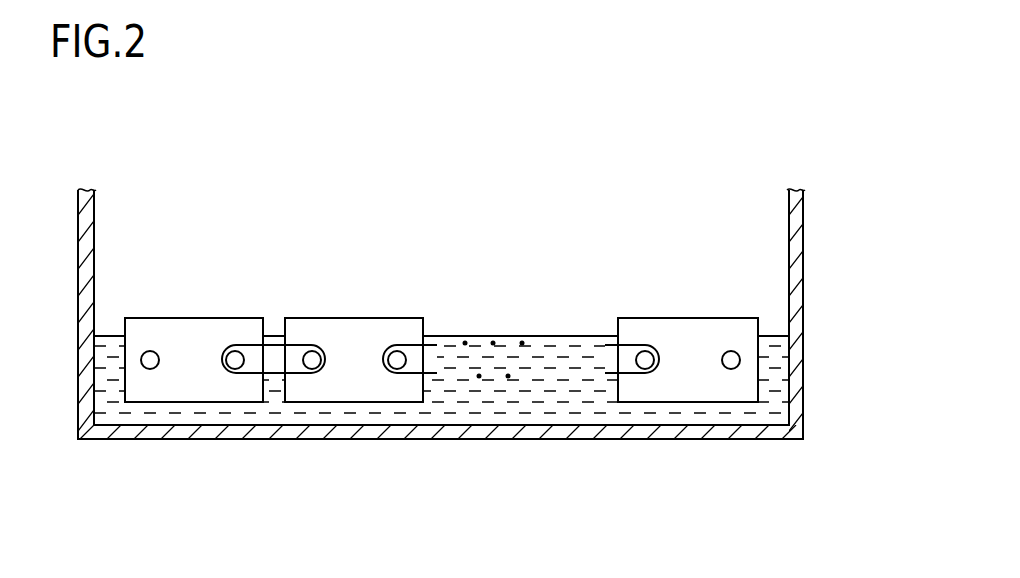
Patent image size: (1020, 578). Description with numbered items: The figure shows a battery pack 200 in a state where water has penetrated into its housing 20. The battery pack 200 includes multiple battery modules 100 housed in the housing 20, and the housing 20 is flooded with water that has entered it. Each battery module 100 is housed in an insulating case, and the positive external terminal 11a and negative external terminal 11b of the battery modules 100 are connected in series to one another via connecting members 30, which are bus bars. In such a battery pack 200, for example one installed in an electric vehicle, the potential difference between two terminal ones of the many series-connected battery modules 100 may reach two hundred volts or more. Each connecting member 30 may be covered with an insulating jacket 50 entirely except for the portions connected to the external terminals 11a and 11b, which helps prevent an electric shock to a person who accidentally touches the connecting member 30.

The battery pack 200 is at (719, 152).
The housing 20 is at (628, 440).
The insulating jacket 50 is at (510, 400).
The battery module 100 is at (200, 336).
The connecting member 30 is at (272, 368).
The positive external terminal 11a is at (235, 351).
The negative external terminal 11b is at (150, 351).